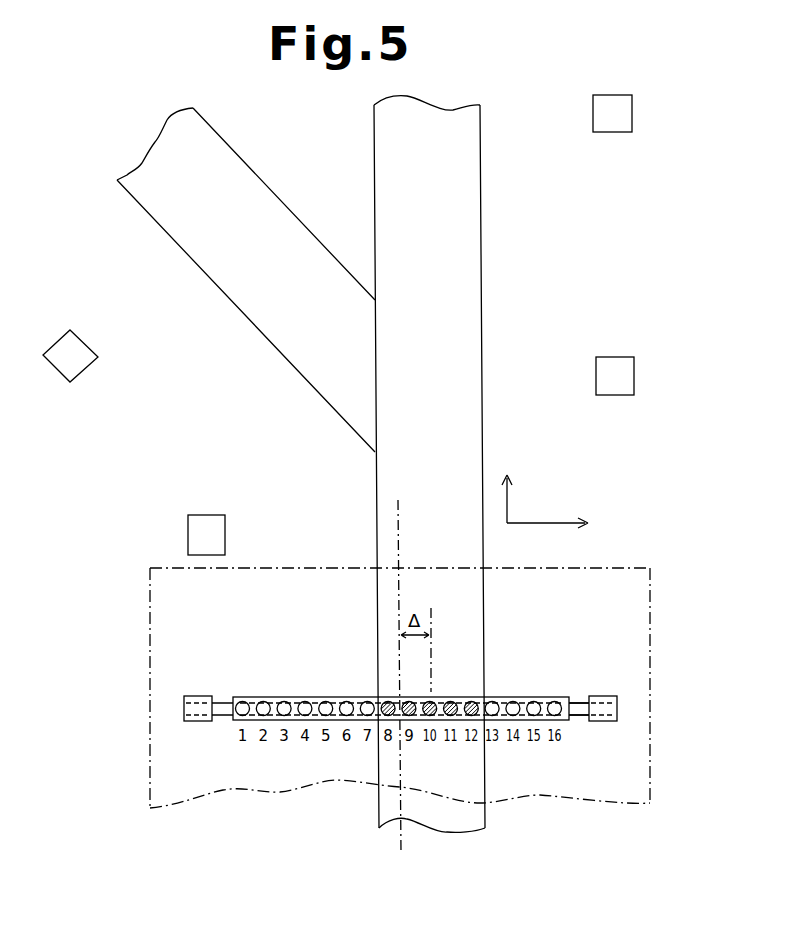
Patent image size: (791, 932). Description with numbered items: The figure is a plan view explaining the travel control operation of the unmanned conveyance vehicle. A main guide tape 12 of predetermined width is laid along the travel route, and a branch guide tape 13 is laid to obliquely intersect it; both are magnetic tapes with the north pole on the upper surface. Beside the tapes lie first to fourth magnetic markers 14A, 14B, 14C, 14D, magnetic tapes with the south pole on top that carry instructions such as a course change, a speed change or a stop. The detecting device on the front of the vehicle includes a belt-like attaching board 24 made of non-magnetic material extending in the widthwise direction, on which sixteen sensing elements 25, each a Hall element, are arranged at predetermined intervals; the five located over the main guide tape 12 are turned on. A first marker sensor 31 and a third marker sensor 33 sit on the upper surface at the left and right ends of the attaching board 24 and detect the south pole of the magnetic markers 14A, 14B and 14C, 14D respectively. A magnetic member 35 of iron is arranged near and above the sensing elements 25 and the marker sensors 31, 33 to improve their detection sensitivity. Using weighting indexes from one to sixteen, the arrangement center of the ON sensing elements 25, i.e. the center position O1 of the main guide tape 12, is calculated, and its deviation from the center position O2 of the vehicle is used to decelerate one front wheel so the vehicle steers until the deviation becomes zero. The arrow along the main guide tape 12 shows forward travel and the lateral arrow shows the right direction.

The main guide tape 12 is at (469, 206).
The branch guide tape 13 is at (220, 268).
The first magnetic marker 14A is at (207, 527).
The second magnetic marker 14B is at (65, 345).
The third magnetic marker 14C is at (622, 376).
The fourth magnetic marker 14D is at (620, 113).
The attaching board 24 is at (545, 697).
The sensing elements 25 is at (326, 701).
The first marker sensor 31 is at (184, 706).
The third marker sensor 33 is at (617, 707).
The magnetic member 35 is at (580, 698).
The center position of the main guide tape O1 is at (432, 670).
The center position of the unmanned conveyance vehicle O2 is at (397, 590).